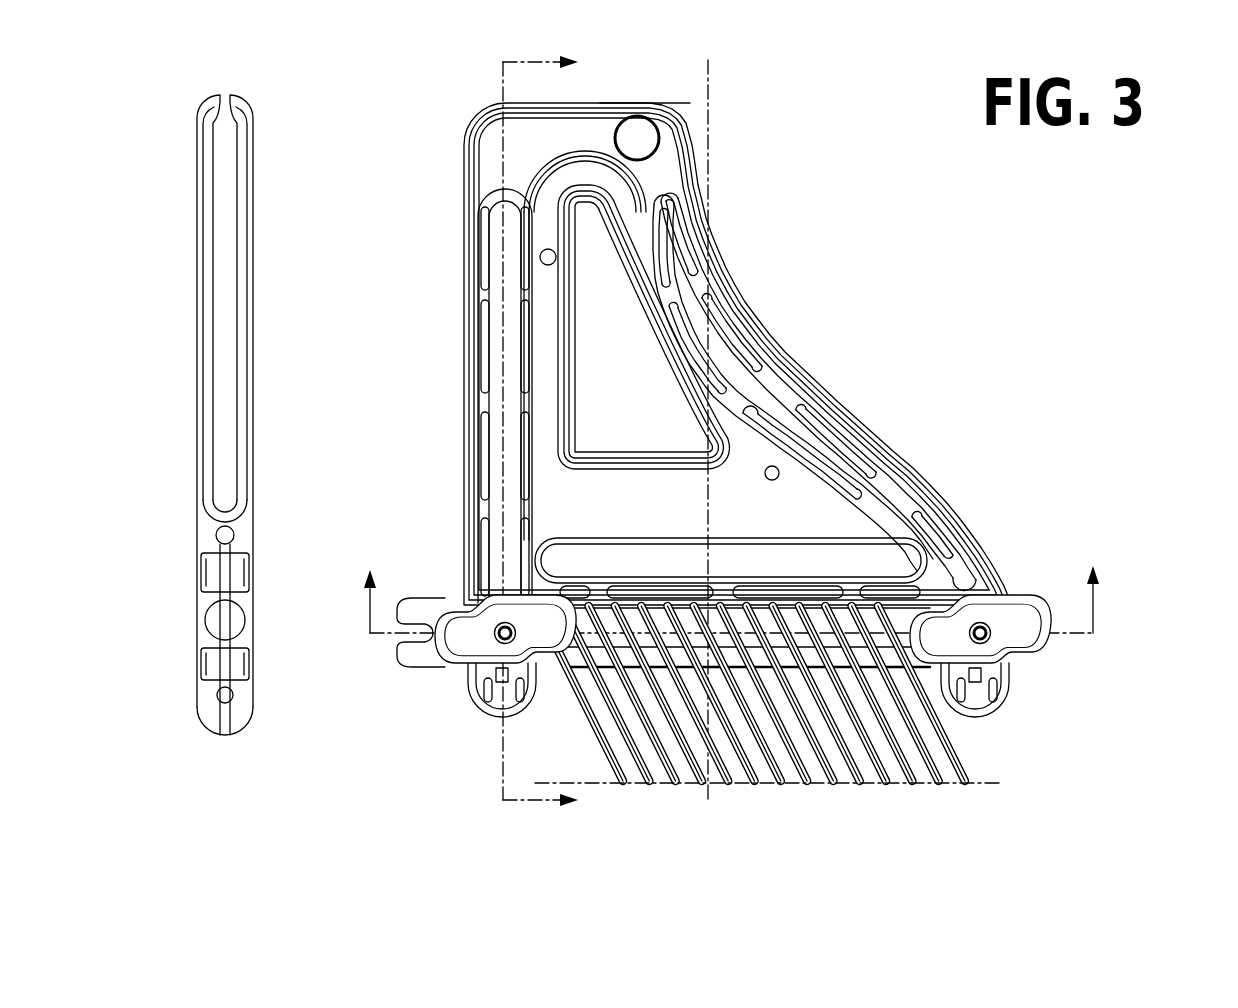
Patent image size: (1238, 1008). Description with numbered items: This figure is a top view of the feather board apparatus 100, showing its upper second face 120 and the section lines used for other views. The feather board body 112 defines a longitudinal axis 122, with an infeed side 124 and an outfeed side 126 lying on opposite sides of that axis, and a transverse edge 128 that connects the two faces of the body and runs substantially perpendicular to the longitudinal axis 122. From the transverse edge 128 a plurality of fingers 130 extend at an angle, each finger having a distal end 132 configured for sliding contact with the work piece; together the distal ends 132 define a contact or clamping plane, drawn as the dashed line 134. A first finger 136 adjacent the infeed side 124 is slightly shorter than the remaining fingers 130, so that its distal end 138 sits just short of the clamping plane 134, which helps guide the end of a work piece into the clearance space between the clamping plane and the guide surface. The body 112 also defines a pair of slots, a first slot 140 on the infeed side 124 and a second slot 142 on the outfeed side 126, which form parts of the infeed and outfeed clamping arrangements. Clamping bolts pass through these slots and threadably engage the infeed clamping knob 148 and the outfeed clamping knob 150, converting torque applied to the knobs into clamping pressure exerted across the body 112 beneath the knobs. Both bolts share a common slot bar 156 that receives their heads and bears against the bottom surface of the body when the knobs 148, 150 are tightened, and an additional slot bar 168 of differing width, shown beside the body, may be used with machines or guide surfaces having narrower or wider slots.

The feather board apparatus 100 is at (756, 451).
The feather board body 112 is at (697, 168).
The second face 120 is at (643, 103).
The longitudinal axis 122 is at (712, 108).
The infeed side 124 is at (412, 696).
The outfeed side 126 is at (1072, 700).
The transverse edge 128 is at (877, 582).
The fingers 130 is at (913, 785).
The distal end 132 is at (887, 785).
The contact plane 134 is at (1010, 783).
The first finger 136 is at (594, 738).
The distal end of first finger 138 is at (628, 786).
The first slot 140 is at (482, 405).
The second slot 142 is at (803, 410).
The infeed clamping knob 148 is at (468, 648).
The outfeed clamping knob 150 is at (1025, 632).
The slot bar 156 is at (422, 664).
The additional slot bar 168 is at (205, 716).